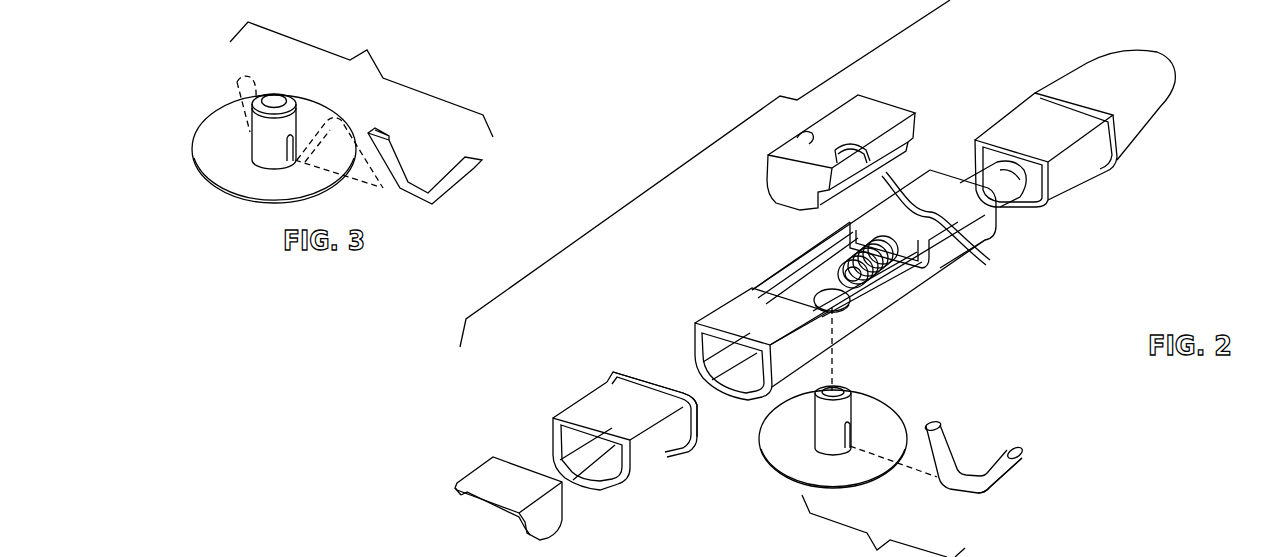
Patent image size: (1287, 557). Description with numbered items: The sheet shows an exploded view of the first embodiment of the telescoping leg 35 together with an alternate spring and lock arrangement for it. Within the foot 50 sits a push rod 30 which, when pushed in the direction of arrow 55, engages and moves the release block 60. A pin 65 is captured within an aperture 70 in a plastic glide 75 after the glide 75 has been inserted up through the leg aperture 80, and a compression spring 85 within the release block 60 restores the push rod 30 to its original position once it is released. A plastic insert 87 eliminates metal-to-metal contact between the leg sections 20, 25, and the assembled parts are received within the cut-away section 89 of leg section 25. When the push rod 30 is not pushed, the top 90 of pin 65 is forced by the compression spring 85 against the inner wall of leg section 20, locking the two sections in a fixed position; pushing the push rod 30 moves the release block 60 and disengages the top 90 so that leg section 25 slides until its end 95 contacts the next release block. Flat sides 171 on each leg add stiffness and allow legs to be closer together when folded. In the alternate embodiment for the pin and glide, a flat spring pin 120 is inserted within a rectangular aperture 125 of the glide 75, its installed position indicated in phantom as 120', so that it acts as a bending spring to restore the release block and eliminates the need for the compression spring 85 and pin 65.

In FIG. 2, the leg section 20 is at (523, 494).
In FIG. 2, the leg section 25 is at (962, 278).
In FIG. 2, the push rod 30 is at (1003, 188).
In FIG. 2, the telescoping leg 35 is at (1204, 141).
In FIG. 2, the foot 50 is at (1172, 92).
In FIG. 2, the arrow 55 is at (1165, 166).
In FIG. 2, the release block 60 is at (913, 100).
In FIG. 2, the pin 65 is at (1023, 457).
In FIG. 2, the aperture 70 is at (853, 432).
In FIG. 3, the plastic glide 75 is at (205, 130).
In FIG. 2, the plastic glide 75 is at (762, 472).
In FIG. 2, the leg aperture 80 is at (853, 305).
In FIG. 2, the compression spring 85 is at (847, 262).
In FIG. 2, the plastic insert 87 is at (633, 420).
In FIG. 2, the cut-away section 89 is at (788, 290).
In FIG. 2, the top 90 is at (940, 423).
In FIG. 2, the end 95 is at (787, 183).
In FIG. 3, the flat spring pin 120 is at (450, 170).
In FIG. 3, the flat spring pin 120' is at (264, 109).
In FIG. 3, the rectangular aperture 125 is at (292, 165).
In FIG. 2, the flat sides 171 is at (555, 460).